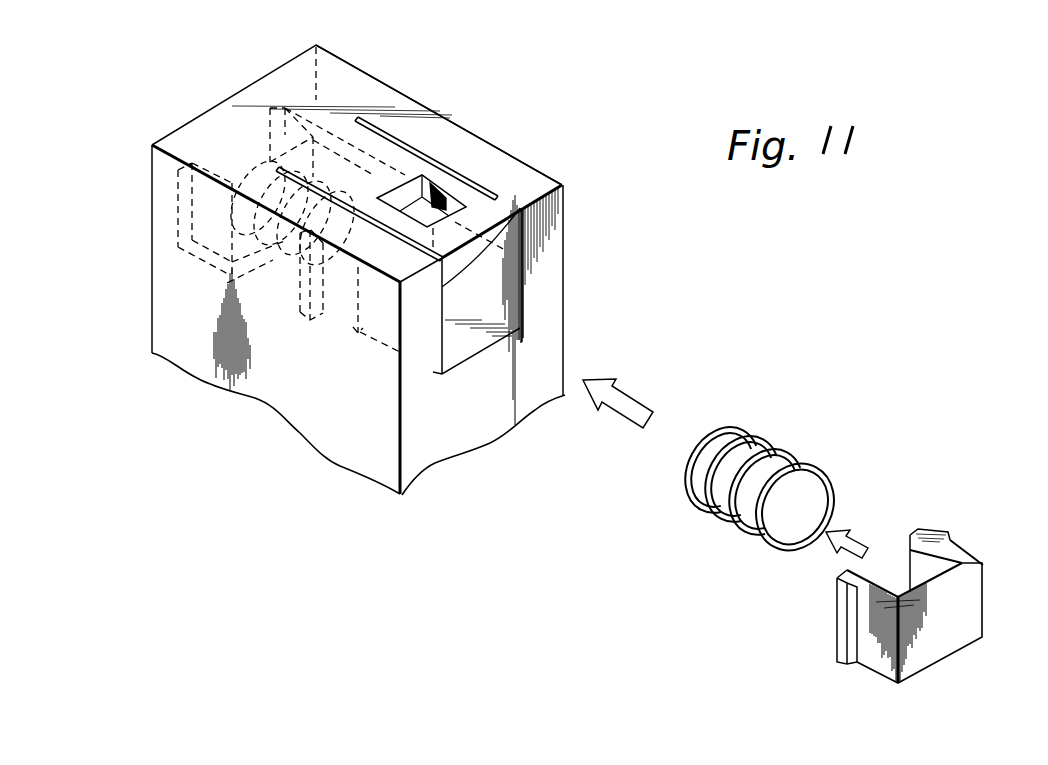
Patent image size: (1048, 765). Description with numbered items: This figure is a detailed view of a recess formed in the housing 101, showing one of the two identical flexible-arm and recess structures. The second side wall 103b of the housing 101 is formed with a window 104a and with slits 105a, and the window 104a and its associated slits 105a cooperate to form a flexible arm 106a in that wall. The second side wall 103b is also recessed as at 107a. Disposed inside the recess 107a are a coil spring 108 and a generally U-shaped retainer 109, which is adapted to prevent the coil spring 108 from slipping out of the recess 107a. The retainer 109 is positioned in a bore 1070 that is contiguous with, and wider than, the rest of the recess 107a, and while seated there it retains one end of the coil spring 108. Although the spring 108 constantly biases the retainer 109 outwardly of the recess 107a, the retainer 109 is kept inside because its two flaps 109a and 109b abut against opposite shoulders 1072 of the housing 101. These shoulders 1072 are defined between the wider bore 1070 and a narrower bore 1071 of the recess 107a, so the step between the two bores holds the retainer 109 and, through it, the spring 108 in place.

The housing 101 is at (192, 121).
The second side wall 103b is at (271, 78).
The slit 105a is at (418, 148).
The window 104a is at (437, 185).
The flexible arm 106a is at (488, 205).
The recess 107a is at (512, 272).
The narrower bore 1071 is at (510, 328).
The bore 1070 is at (235, 283).
The shoulders 1072 is at (308, 322).
The coil spring 108 is at (277, 277).
The retainer 109 is at (344, 333).
The flap 109a is at (922, 531).
The flap 109b is at (836, 628).